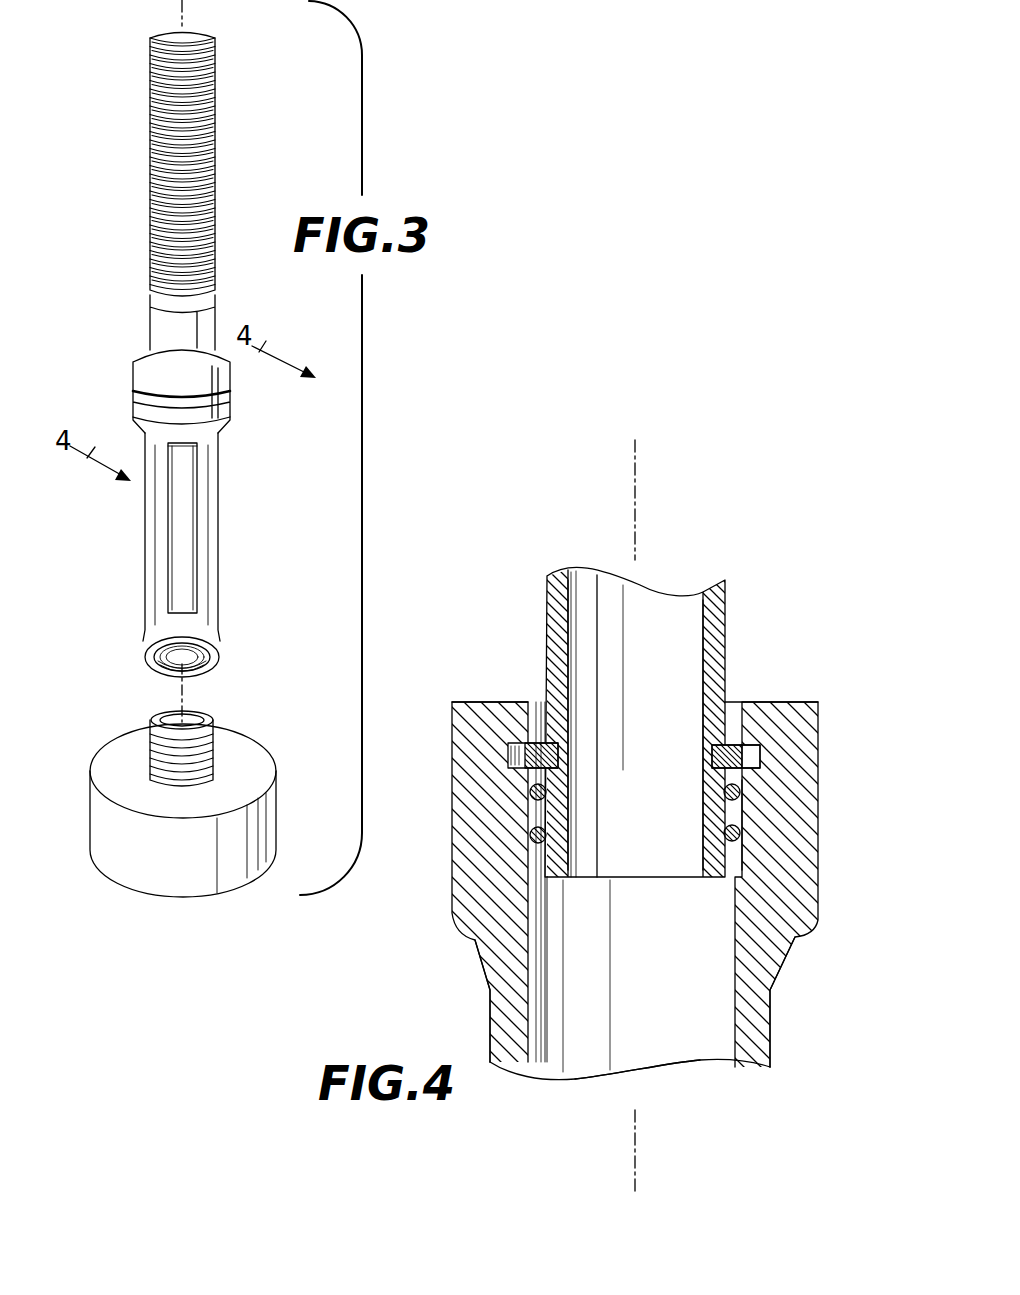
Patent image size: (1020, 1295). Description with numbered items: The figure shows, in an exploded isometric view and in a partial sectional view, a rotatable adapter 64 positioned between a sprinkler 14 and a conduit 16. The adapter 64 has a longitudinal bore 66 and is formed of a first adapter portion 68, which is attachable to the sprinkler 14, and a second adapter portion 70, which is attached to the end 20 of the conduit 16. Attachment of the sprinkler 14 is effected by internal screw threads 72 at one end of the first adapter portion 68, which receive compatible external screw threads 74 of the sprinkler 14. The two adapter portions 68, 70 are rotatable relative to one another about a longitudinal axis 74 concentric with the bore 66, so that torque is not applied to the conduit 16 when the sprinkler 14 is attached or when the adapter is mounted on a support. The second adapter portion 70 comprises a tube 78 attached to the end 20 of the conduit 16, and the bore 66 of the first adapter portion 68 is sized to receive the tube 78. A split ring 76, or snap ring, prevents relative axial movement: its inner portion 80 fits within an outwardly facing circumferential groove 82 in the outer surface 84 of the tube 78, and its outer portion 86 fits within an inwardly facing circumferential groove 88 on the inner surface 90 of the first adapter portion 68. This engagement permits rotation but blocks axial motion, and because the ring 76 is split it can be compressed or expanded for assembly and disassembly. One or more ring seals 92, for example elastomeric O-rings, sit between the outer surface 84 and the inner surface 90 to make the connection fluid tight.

In FIG. 3, the sprinkler 14 is at (103, 816).
In FIG. 3, the conduit 16 is at (217, 112).
In FIG. 3, the end of conduit 20 is at (128, 316).
In FIG. 3, the rotatable adapter 64 is at (240, 399).
In FIG. 4, the rotatable adapter 64 is at (836, 718).
In FIG. 3, the longitudinal bore 66 is at (190, 655).
In FIG. 4, the longitudinal bore 66 is at (628, 1066).
In FIG. 3, the first adapter portion 68 is at (218, 527).
In FIG. 4, the first adapter portion 68 is at (757, 1034).
In FIG. 3, the second adapter portion 70 is at (157, 342).
In FIG. 4, the second adapter portion 70 is at (722, 592).
In FIG. 3, the internal screw threads 72 is at (178, 675).
In FIG. 3, the external screw threads / longitudinal axis 74 is at (215, 760).
In FIG. 4, the external screw threads / longitudinal axis 74 is at (635, 490).
In FIG. 4, the split ring 76 is at (508, 750).
In FIG. 4, the tube 78 is at (713, 622).
In FIG. 4, the inner portion of split ring 80 is at (712, 756).
In FIG. 4, the outwardly facing circumferential groove 82 is at (742, 745).
In FIG. 4, the outer surface of tube 84 is at (547, 656).
In FIG. 4, the outer portion of split ring 86 is at (740, 792).
In FIG. 4, the inwardly facing circumferential groove 88 is at (520, 758).
In FIG. 4, the inner surface of first adapter portion 90 is at (527, 965).
In FIG. 4, the ring seals 92 is at (762, 832).